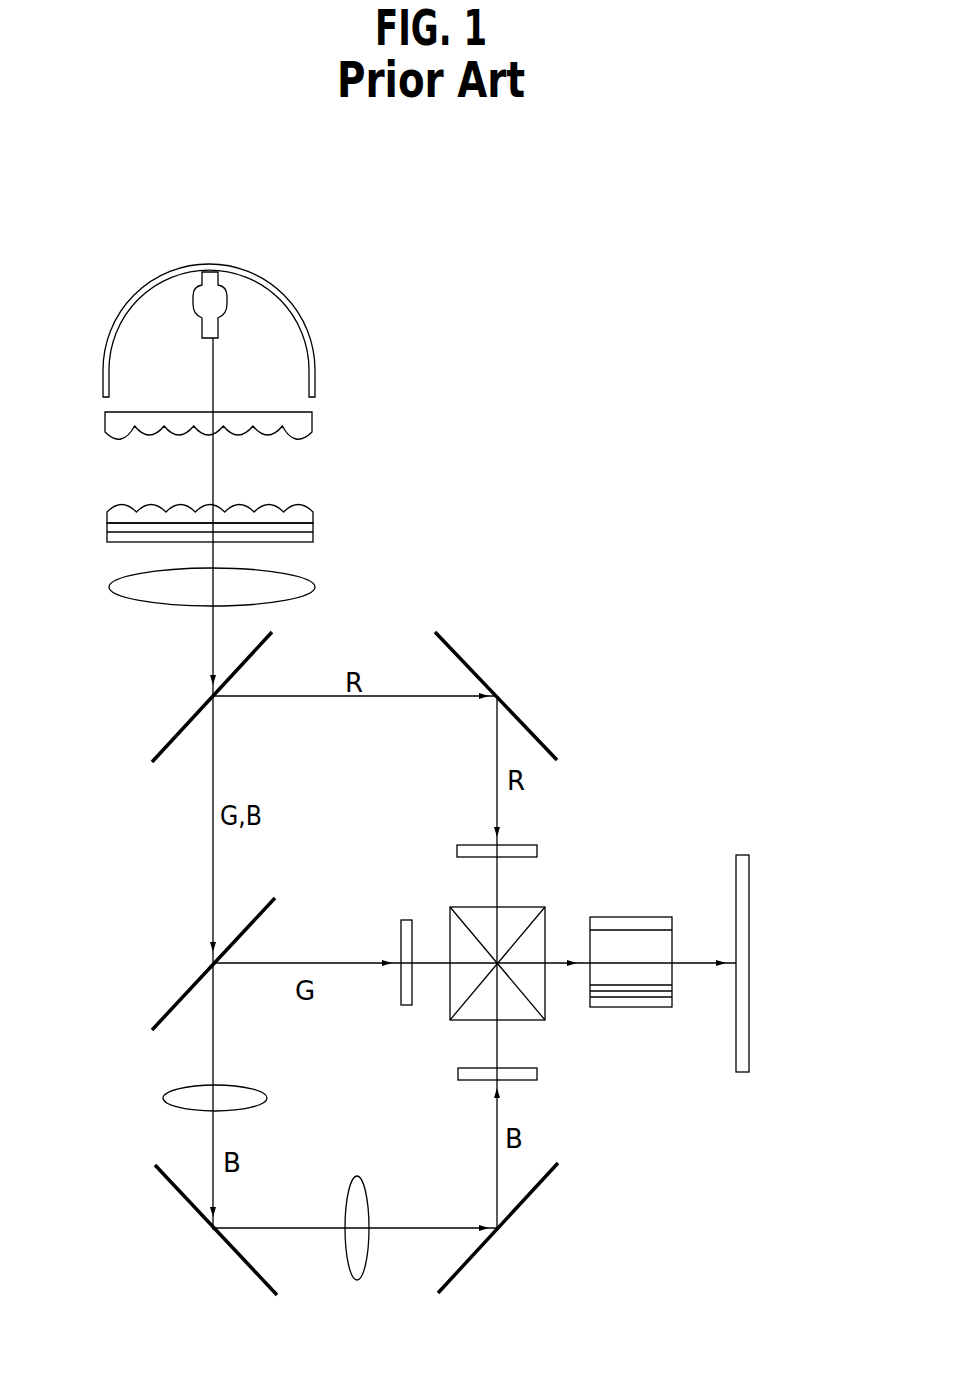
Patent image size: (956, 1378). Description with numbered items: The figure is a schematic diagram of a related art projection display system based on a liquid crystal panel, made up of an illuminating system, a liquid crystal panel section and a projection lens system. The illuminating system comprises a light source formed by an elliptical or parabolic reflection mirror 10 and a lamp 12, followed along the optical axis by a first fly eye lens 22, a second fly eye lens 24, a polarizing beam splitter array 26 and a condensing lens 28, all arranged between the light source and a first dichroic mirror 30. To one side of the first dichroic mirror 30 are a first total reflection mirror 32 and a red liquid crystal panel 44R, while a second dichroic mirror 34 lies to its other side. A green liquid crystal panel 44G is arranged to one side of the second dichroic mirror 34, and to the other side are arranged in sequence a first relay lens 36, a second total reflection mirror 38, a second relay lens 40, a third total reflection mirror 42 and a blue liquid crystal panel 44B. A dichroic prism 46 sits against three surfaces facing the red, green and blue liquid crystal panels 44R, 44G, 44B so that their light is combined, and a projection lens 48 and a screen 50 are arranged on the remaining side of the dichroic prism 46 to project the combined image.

The reflection mirror 10 is at (122, 312).
The lamp 12 is at (220, 300).
The first fly eye lens 22 is at (313, 421).
The second fly eye lens 24 is at (313, 509).
The polarizing beam splitter array 26 is at (308, 533).
The condensing lens 28 is at (108, 587).
The first dichroic mirror 30 is at (170, 738).
The first total reflection mirror 32 is at (468, 660).
The second dichroic mirror 34 is at (172, 1008).
The first relay lens 36 is at (163, 1098).
The second total reflection mirror 38 is at (190, 1207).
The second relay lens 40 is at (356, 1280).
The third total reflection mirror 42 is at (477, 1255).
The red liquid crystal panel 44R is at (537, 850).
The green liquid crystal panel 44G is at (407, 918).
The blue liquid crystal panel 44B is at (456, 1075).
The dichroic prism 46 is at (543, 1000).
The projection lens 48 is at (632, 1000).
The screen 50 is at (749, 1043).